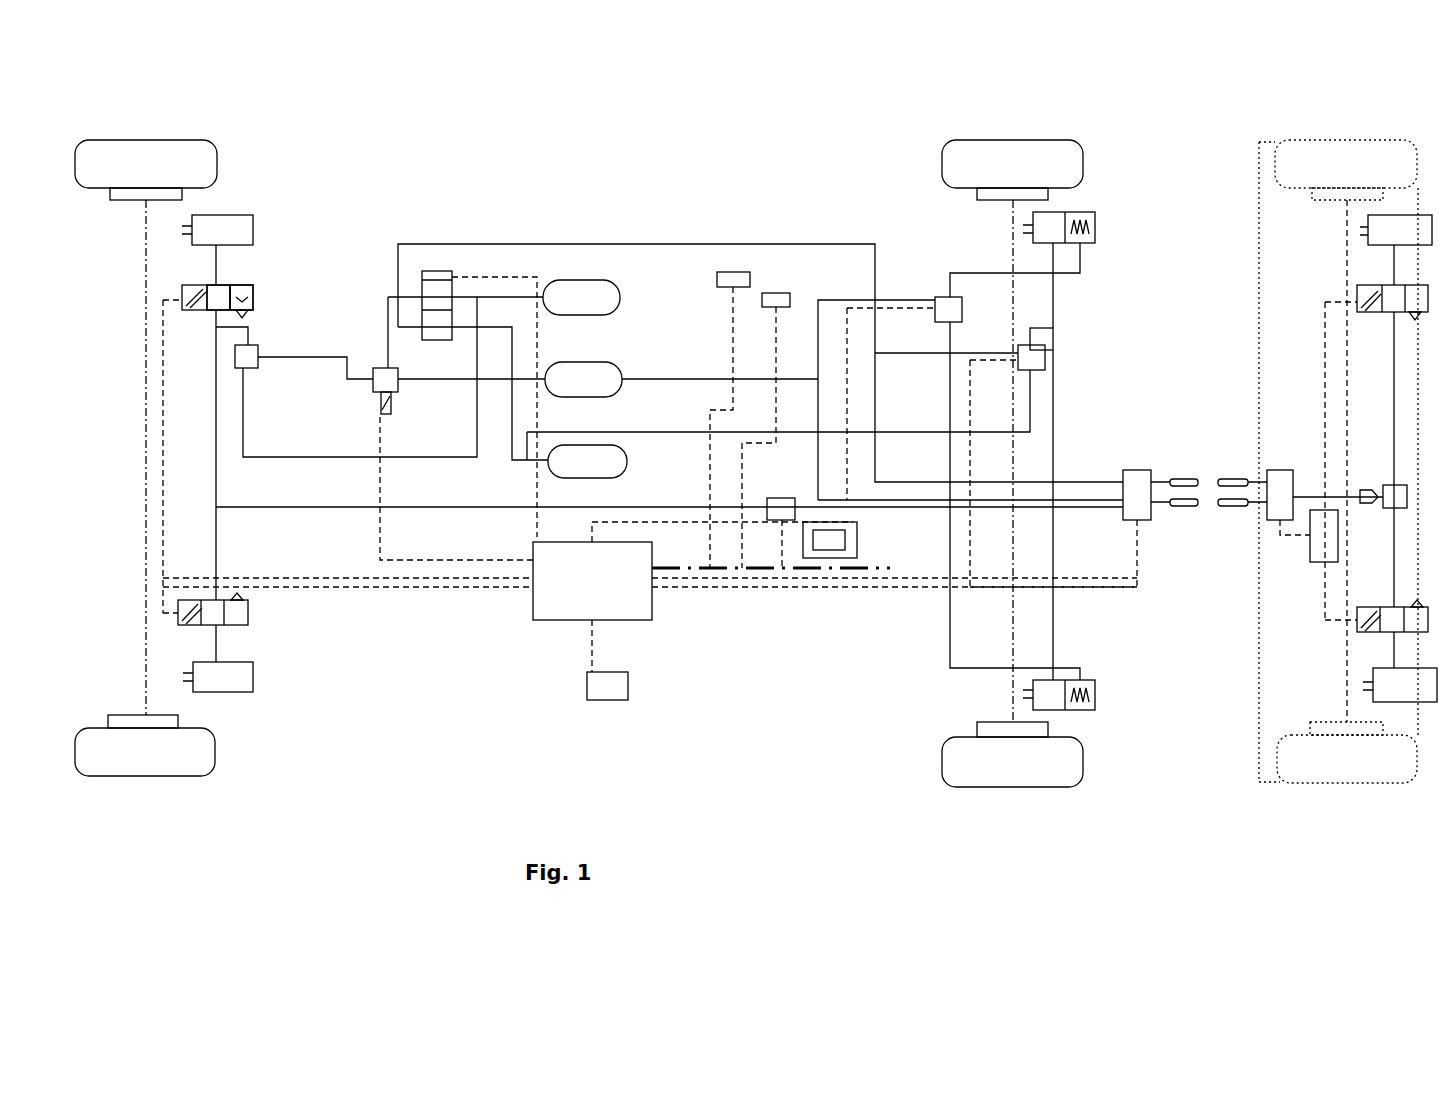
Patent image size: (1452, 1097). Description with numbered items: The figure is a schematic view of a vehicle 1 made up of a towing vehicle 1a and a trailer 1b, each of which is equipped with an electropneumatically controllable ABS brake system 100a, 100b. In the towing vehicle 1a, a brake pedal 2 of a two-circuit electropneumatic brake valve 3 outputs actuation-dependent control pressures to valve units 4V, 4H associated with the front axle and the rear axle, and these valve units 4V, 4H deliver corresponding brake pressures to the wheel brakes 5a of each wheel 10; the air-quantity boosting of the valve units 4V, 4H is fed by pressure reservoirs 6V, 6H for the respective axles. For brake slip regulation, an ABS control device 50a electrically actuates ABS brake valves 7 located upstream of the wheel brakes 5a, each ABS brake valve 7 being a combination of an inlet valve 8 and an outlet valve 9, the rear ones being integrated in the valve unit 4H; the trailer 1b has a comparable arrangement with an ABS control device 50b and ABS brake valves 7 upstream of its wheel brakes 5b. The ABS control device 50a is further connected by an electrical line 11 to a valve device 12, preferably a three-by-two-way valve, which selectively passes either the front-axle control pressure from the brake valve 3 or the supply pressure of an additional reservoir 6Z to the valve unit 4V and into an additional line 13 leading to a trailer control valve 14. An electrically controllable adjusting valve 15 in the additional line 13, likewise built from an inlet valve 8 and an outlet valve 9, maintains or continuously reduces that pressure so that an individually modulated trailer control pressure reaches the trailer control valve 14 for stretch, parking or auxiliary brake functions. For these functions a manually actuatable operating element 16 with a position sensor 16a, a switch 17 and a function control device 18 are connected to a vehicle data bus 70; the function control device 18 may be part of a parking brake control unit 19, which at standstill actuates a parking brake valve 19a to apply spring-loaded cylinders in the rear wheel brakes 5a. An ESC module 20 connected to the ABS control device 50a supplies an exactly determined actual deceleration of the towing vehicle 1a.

The vehicle 1 is at (213, 83).
The towing vehicle 1a is at (600, 185).
The trailer 1b is at (1253, 152).
The brake pedal 2 is at (437, 270).
The electropneumatic brake valve 3 is at (437, 340).
The valve unit 4V is at (260, 368).
The valve unit 4H is at (1045, 357).
The wheel brakes 5a is at (253, 230).
The wheel brakes 5b is at (1393, 215).
The pressure reservoir 6V is at (620, 298).
The additional reservoir 6Z is at (622, 377).
The pressure reservoir 6H is at (627, 462).
The ABS brake valves 7 is at (186, 286).
The inlet valve 8 is at (230, 288).
The outlet valve 9 is at (250, 300).
The wheel 10 is at (218, 163).
The electrical line 11 is at (378, 561).
The valve device 12 is at (378, 392).
The additional line 13 is at (353, 508).
The trailer control valve 14 is at (1137, 470).
The adjusting valve 15 is at (778, 511).
The operating element 16 is at (737, 272).
The position sensor 16a is at (717, 279).
The switch 17 is at (777, 293).
The function control device 18 is at (840, 566).
The parking brake control unit 19 is at (818, 560).
The parking brake valve 19a is at (940, 297).
The ESC module 20 is at (602, 700).
The ABS control device 50a is at (652, 605).
The ABS control device 50b is at (1310, 550).
The vehicle data bus 70 is at (677, 568).
The ABS brake system 100a is at (440, 735).
The ABS brake system 100b is at (1270, 710).